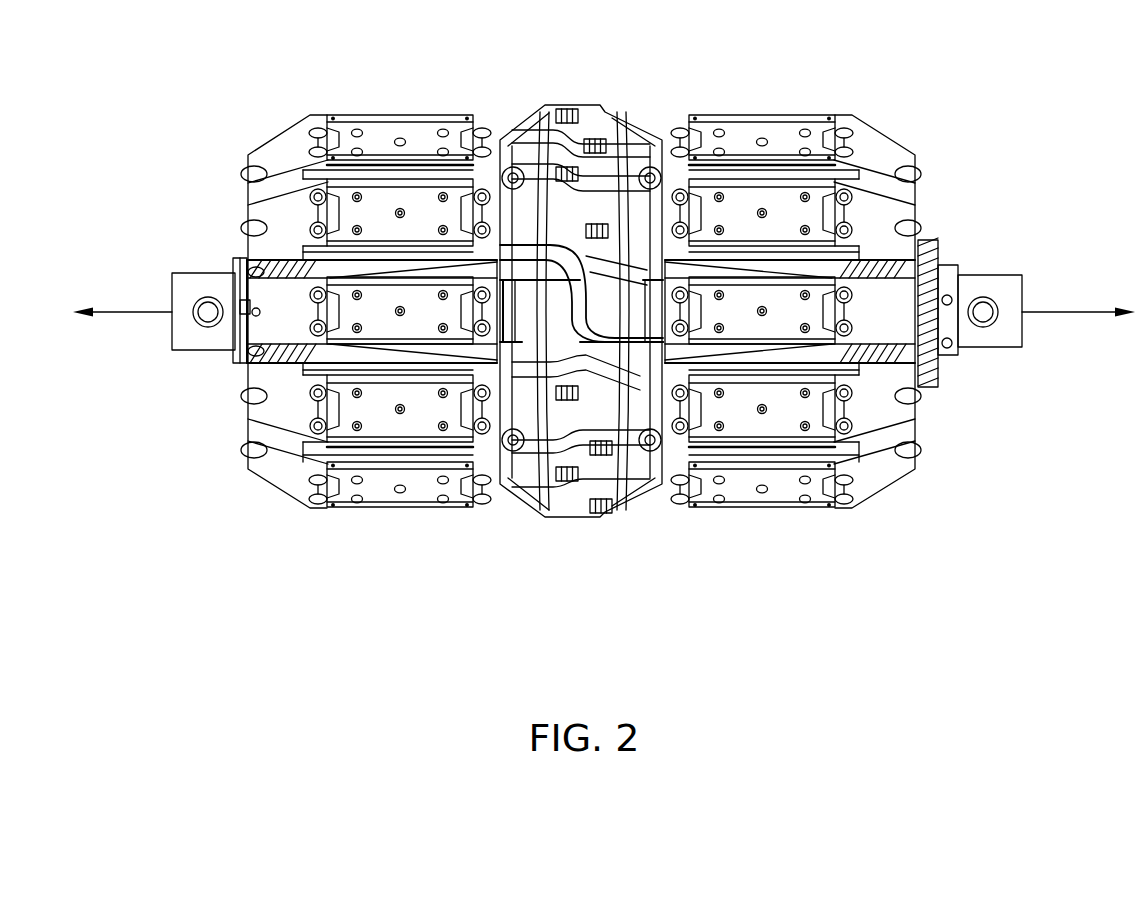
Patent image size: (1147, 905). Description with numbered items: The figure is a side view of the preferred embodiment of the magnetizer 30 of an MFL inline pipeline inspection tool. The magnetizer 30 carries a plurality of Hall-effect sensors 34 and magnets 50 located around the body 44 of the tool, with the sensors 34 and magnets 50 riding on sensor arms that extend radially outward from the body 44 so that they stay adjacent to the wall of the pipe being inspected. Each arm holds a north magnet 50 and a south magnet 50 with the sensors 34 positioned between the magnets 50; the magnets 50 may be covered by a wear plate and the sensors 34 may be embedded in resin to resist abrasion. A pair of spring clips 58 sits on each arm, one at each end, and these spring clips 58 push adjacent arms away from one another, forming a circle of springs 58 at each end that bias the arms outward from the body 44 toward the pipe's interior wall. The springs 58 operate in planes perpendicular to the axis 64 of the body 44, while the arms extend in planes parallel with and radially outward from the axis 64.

The magnetizer 30 is at (308, 582).
The Hall-effect sensors 34 is at (573, 105).
The body 44 is at (193, 280).
The magnets 50 is at (402, 115).
The spring clips 58 is at (318, 292).
The axis 64 is at (110, 312).